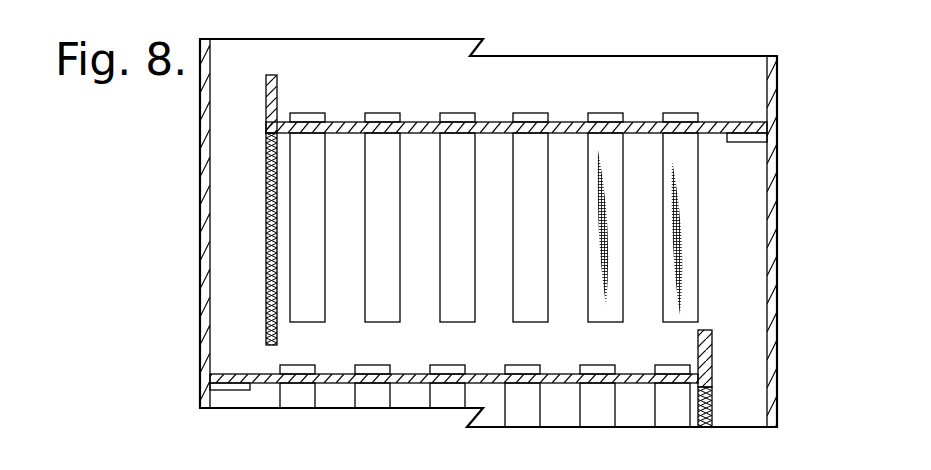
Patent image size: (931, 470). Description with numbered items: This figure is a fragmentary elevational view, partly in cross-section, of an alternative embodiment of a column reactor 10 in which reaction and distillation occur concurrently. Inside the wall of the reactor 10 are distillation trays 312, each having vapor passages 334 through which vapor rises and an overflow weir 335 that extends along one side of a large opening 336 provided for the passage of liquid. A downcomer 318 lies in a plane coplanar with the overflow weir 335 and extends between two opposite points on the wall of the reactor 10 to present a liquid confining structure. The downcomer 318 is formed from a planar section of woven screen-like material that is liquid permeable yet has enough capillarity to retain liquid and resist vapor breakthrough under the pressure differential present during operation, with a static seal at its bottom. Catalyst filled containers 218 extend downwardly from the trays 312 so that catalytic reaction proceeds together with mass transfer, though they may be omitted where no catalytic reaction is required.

The reactor 10 is at (779, 291).
The catalyst filled containers 218 is at (704, 205).
The distillation tray 312 is at (734, 121).
The downcomer 318 is at (261, 284).
The vapor passages 334 is at (653, 122).
The overflow weir 335 is at (272, 100).
The large opening 336 is at (232, 165).